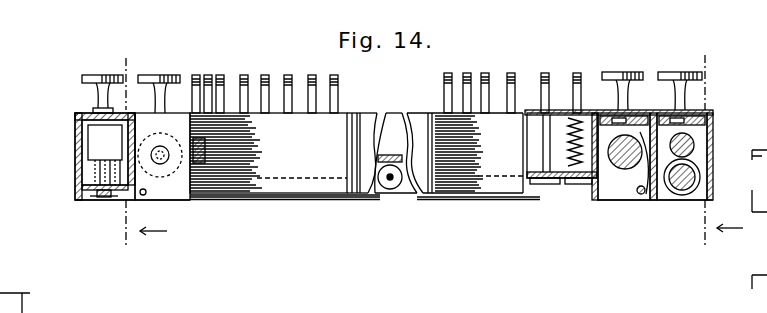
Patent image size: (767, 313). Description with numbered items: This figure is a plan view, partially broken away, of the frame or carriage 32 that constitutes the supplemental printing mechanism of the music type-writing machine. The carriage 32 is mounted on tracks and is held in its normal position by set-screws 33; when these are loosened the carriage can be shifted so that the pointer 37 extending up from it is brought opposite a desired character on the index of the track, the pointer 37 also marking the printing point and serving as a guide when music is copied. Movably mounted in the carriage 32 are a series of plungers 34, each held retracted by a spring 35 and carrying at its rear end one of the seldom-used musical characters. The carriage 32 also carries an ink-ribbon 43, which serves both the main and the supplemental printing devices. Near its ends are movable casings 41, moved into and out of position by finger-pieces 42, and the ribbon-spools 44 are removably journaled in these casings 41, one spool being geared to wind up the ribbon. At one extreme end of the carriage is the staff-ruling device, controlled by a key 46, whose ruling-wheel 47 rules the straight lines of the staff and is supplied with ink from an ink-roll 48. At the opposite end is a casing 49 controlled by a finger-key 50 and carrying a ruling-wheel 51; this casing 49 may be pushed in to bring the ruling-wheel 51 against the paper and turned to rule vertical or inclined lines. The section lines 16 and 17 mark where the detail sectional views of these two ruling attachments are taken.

The section line 16- 16 is at (715, 150).
The section line 17- 17 is at (139, 156).
The frame or carriage 32 is at (356, 153).
The set-screws 33 is at (164, 162).
The plungers 34 is at (244, 75).
The spring 35 is at (572, 180).
The pointer 37 is at (391, 180).
The movable casings 41 is at (612, 118).
The finger-pieces 42 is at (163, 66).
The ink-ribbon 43 is at (299, 199).
The ribbon-spools 44 is at (626, 170).
The key 46 is at (679, 78).
The ruling-wheel 47 is at (682, 195).
The ink-roll 48 is at (695, 144).
The casing 49 is at (92, 165).
The finger-key 50 is at (82, 79).
The ruling-wheel 51 is at (100, 200).